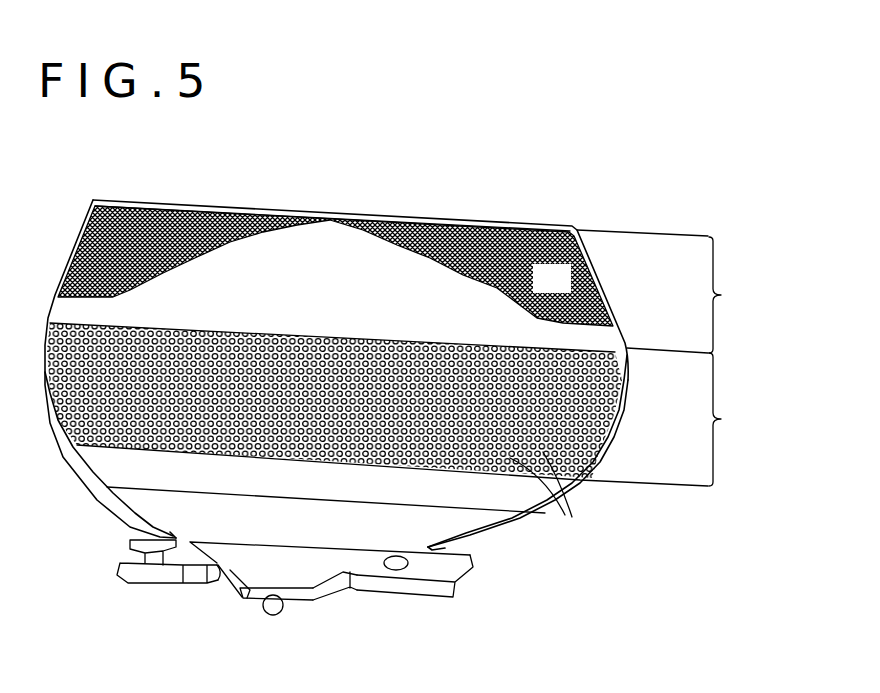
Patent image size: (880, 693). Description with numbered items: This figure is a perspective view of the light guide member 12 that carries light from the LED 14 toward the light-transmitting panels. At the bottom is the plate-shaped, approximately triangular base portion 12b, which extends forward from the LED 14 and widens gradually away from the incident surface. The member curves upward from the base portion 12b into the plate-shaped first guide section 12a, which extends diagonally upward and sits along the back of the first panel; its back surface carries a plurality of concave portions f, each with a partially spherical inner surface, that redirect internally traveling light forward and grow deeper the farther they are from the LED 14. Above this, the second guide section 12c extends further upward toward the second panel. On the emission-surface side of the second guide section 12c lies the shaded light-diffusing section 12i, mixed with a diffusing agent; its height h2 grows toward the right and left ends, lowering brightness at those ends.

The light guide member 12 is at (412, 187).
The light-diffusing section 12i is at (507, 243).
The second guide section 12c is at (412, 279).
The first guide section 12a is at (407, 404).
The base portion 12b is at (358, 547).
The LED 14 is at (268, 615).
The height of the light-diffusing section h2 is at (552, 278).
The concave portions f is at (547, 494).